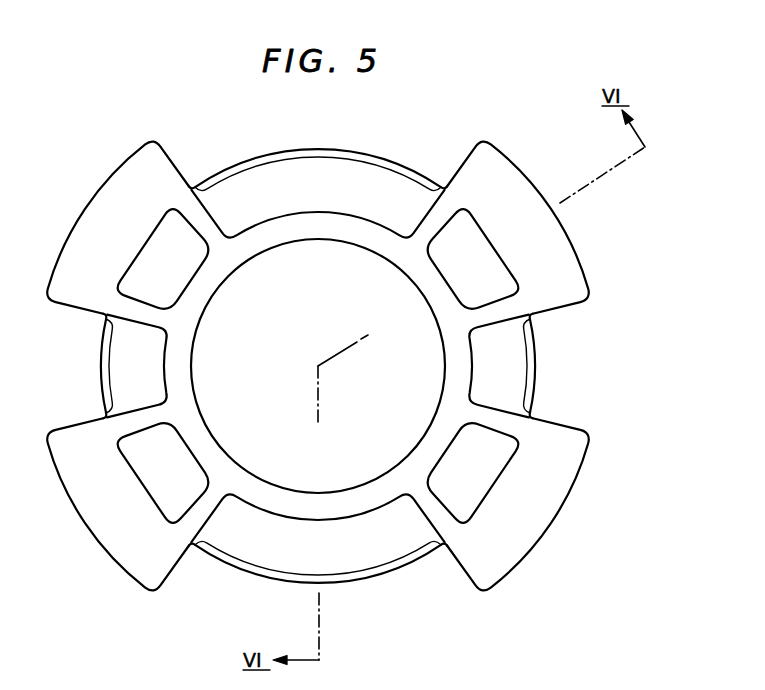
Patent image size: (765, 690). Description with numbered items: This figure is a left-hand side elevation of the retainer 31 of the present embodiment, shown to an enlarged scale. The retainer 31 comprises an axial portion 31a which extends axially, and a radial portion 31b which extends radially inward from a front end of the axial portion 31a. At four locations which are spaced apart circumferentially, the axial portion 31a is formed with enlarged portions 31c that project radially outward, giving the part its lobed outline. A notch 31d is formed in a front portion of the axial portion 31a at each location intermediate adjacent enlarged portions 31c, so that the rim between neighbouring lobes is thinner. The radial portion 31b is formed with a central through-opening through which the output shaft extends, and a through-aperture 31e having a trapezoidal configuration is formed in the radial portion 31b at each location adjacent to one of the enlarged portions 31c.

The retainer 31 is at (650, 331).
The axial portion 31a is at (238, 568).
The radial portion 31b is at (258, 245).
The enlarged portions 31c is at (112, 174).
The notch 31d is at (355, 162).
The through-aperture 31e is at (131, 249).